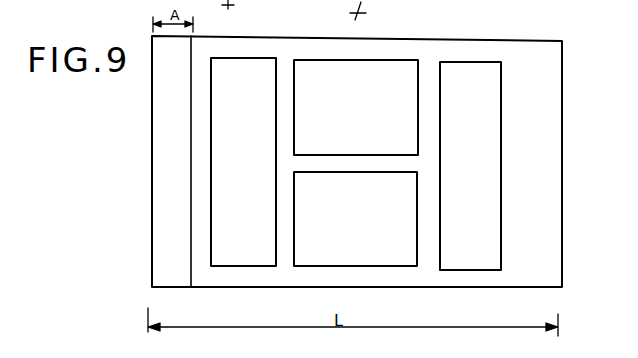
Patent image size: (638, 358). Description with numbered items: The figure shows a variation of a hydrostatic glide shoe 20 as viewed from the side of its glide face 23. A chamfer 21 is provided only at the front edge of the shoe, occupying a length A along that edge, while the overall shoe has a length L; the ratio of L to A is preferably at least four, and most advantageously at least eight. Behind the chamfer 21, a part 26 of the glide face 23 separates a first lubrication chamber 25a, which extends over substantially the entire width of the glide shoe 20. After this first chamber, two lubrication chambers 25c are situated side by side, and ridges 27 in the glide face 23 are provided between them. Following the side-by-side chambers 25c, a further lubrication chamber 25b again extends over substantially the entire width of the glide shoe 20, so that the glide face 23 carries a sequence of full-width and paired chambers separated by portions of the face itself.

The glide shoe 20 is at (478, 55).
The chamfer 21 is at (156, 192).
The glide face 23 is at (540, 237).
The first lubrication chamber 25a is at (218, 138).
The lubrication chamber 25b is at (487, 157).
The lubrication chambers 25c is at (377, 180).
The part of the glide face 26 is at (307, 50).
The ridges 27 is at (427, 233).